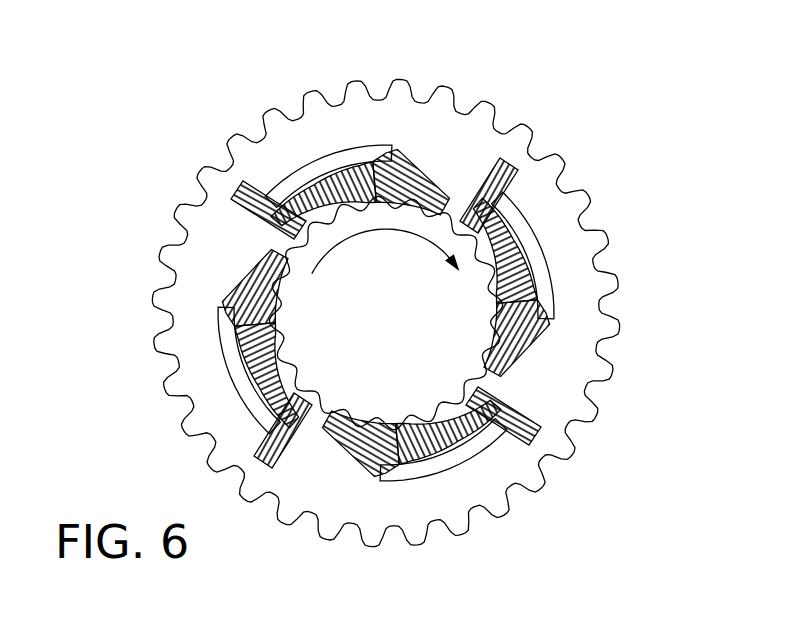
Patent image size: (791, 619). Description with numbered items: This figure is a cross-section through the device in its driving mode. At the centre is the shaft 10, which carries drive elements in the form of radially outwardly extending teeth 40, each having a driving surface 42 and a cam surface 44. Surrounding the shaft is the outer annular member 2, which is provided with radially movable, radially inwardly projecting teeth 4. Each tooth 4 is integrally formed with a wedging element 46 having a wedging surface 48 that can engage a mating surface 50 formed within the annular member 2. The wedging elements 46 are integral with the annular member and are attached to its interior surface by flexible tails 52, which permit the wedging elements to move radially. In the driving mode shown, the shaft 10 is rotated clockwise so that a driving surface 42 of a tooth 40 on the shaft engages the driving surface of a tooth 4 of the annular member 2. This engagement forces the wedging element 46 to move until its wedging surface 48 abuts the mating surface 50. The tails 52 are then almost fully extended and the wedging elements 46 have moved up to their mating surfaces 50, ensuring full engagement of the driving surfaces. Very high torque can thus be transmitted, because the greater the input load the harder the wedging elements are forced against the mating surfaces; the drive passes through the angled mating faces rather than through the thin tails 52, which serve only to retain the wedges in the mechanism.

The outer annular member 2 is at (492, 123).
The radially inwardly projecting tooth 4 is at (365, 188).
The shaft 10 is at (428, 388).
The radially outwardly extending tooth 40 is at (490, 276).
The driving surface 42 is at (335, 185).
The cam surface 44 is at (275, 234).
The wedging element 46 is at (262, 300).
The wedging surface 48 is at (410, 172).
The mating surface 50 is at (496, 338).
The flexible tail 52 is at (473, 211).